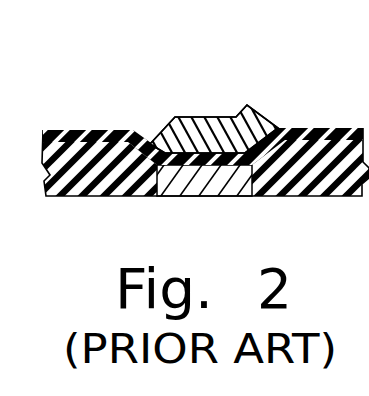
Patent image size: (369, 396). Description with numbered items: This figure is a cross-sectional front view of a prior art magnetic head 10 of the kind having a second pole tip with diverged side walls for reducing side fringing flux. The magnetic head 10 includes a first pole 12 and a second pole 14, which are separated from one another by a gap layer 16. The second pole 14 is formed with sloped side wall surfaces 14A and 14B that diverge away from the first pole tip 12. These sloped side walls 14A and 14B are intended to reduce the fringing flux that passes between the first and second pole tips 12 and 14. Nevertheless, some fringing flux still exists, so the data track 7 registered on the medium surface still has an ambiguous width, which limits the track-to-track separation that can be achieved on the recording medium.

The magnetic head 10 is at (184, 128).
The first pole 12 is at (230, 177).
The second pole 14 is at (216, 117).
The sloped side wall surface 14A is at (117, 131).
The sloped side wall surface 14B is at (276, 150).
The gap layer 16 is at (200, 163).
The data track 7 is at (363, 87).